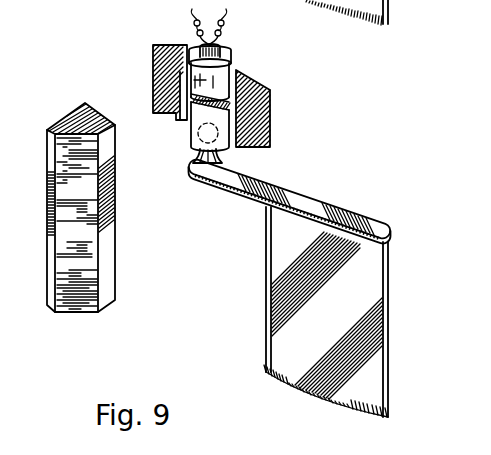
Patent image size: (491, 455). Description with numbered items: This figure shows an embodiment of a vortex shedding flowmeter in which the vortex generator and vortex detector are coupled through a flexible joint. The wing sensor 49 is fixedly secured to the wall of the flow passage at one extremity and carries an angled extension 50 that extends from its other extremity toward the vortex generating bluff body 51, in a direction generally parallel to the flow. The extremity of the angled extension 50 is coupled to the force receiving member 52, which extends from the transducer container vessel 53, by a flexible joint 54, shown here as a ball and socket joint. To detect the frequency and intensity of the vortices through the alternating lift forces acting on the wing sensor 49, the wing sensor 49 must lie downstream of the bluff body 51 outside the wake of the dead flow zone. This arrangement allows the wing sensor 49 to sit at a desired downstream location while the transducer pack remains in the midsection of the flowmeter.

The wing sensor 49 is at (325, 306).
The angled extension 50 is at (293, 200).
The vortex generating bluff body 51 is at (64, 250).
The force receiving member 52 is at (250, 110).
The transducer container vessel 53 is at (199, 80).
The flexible joint 54 is at (235, 152).